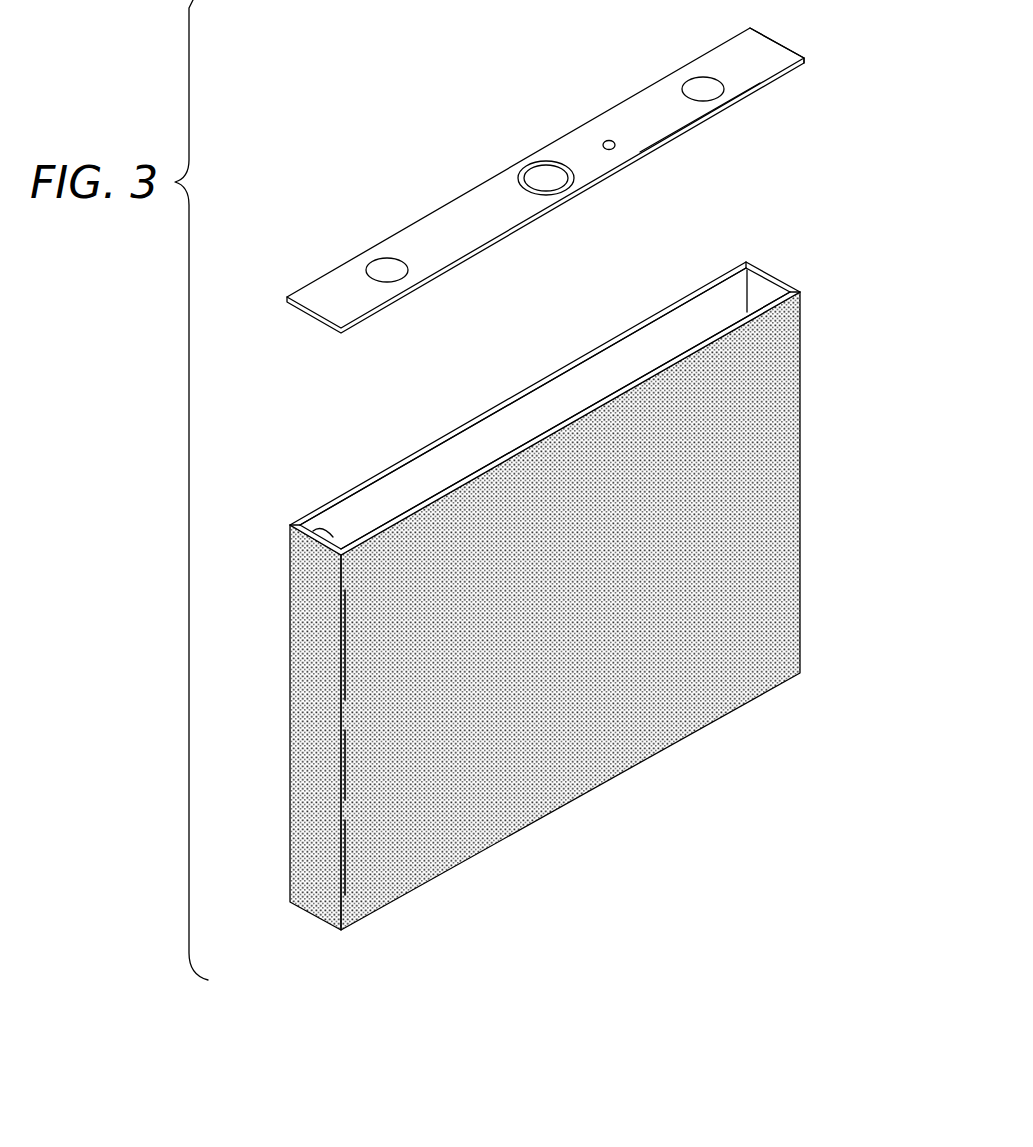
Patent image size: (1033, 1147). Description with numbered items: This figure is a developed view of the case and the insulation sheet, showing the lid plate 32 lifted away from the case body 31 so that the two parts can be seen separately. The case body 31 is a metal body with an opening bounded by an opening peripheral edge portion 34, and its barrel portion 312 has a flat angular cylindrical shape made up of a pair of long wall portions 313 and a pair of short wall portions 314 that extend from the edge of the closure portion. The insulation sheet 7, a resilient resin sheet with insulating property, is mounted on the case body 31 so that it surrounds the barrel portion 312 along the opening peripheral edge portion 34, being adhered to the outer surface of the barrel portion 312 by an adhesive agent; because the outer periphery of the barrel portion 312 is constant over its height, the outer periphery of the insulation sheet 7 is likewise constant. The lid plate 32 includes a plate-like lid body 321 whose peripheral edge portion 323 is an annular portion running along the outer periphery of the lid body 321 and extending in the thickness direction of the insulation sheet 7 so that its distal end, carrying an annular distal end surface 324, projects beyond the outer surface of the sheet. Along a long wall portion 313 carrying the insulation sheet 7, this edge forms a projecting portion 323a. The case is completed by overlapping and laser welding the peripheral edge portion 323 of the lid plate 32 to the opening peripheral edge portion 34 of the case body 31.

The insulation sheet 7 is at (608, 755).
The case body 31 is at (530, 580).
The lid plate 32 is at (578, 180).
The opening peripheral edge portion 34 is at (538, 383).
The barrel portion 312 is at (452, 427).
The long wall portion 313 is at (635, 348).
The short wall portion 314 is at (763, 292).
The lid body 321 is at (483, 200).
The peripheral edge portion 323 is at (767, 97).
The projecting portion 323a is at (707, 130).
The distal end surface 324 is at (623, 177).